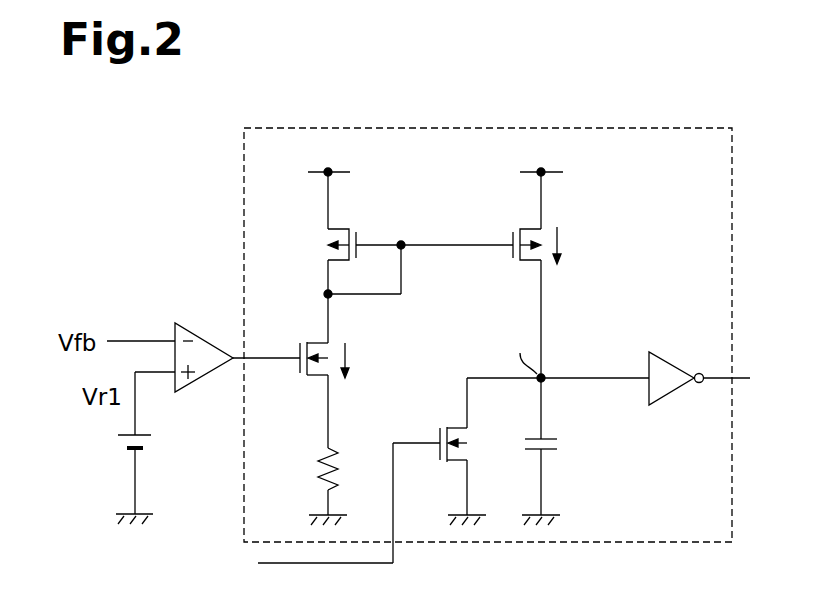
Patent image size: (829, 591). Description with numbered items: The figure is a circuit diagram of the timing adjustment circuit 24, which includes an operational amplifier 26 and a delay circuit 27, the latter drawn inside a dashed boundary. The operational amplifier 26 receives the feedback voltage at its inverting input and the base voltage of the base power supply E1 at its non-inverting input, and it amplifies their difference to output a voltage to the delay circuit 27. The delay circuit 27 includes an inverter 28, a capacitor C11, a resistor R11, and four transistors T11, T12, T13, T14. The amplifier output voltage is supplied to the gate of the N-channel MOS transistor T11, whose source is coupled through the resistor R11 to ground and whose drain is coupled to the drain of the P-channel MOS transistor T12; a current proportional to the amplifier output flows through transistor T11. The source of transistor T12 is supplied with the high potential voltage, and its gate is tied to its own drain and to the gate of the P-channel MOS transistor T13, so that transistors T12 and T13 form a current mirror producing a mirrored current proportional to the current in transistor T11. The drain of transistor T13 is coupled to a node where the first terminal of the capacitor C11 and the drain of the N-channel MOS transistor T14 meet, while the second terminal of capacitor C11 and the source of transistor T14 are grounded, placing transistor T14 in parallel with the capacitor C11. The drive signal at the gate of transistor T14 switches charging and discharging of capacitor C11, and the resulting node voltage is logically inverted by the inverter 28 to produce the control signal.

The timing adjustment circuit 24 is at (160, 132).
The delay circuit 27 is at (244, 171).
The operational amplifier 26 is at (213, 342).
The inverter 28 is at (676, 366).
The N-channel MOS transistor T11 is at (298, 344).
The P-channel MOS transistor T12 is at (354, 233).
The P-channel MOS transistor T13 is at (513, 233).
The N-channel MOS transistor T14 is at (440, 432).
The resistor R11 is at (355, 452).
The capacitor C11 is at (549, 437).
The base power supply E1 is at (131, 452).